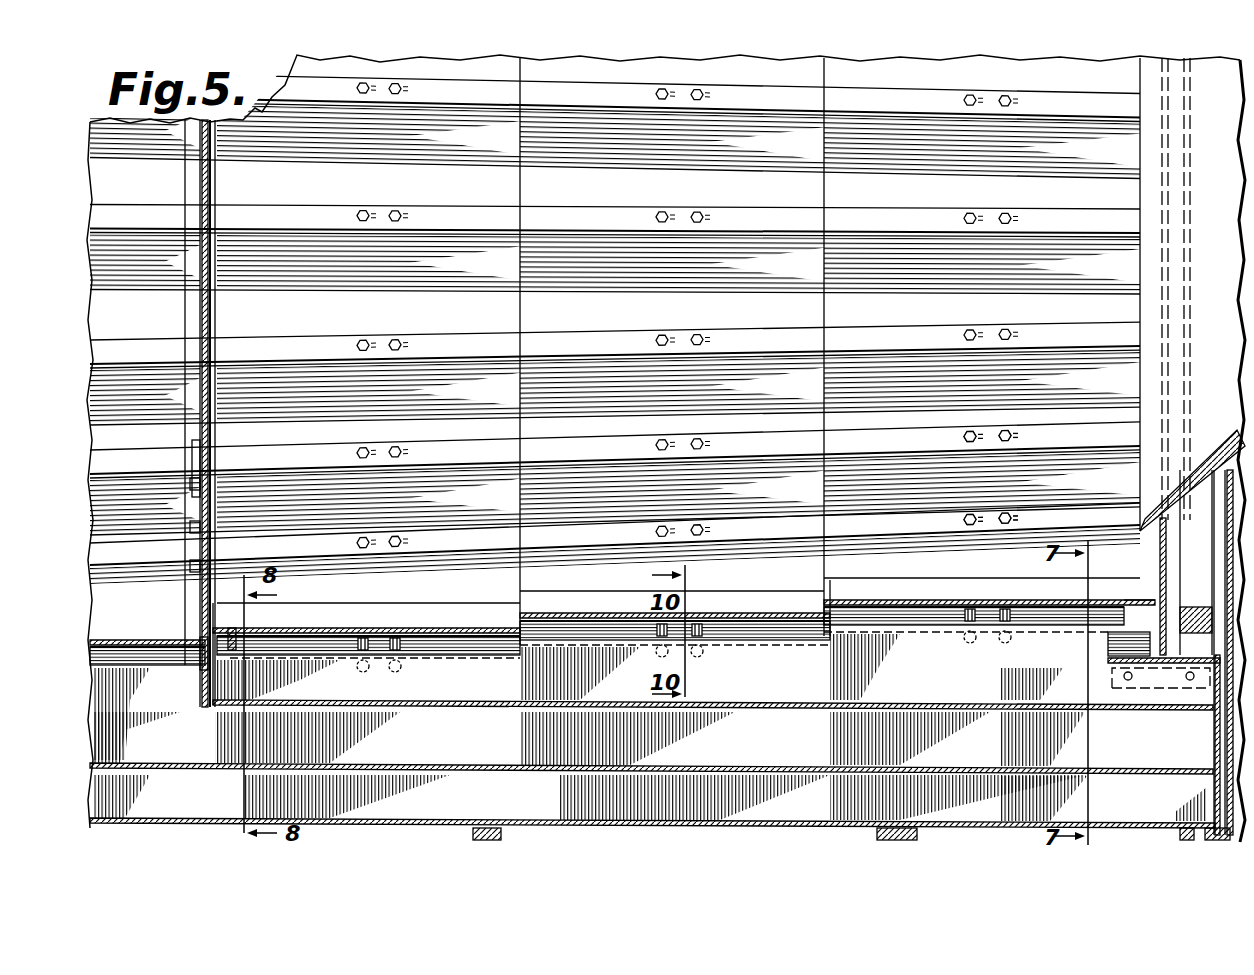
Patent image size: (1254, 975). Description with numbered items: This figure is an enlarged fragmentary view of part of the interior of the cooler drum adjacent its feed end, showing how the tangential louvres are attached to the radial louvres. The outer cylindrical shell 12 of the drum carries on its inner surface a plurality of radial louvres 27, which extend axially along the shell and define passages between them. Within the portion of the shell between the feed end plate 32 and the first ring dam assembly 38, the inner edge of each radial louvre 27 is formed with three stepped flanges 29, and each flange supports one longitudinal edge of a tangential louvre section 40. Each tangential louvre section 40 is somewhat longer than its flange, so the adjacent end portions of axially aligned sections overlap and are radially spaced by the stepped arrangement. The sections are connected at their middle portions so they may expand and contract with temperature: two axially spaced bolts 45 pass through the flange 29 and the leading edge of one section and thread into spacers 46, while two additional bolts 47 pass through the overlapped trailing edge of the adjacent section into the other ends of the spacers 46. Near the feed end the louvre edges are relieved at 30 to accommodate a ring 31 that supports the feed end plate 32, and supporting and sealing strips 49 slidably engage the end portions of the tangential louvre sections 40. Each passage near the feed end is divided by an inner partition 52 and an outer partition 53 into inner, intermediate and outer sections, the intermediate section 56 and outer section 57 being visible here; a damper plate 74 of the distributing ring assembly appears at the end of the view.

The outer cylindrical shell 12 is at (645, 819).
The radial louvres 27 is at (838, 691).
The stepped flanges 29 is at (488, 660).
The relieved portion 30 is at (1108, 645).
The ring 31 is at (1112, 673).
The feed end plate 32 is at (1158, 557).
The ring dam assemblies 38 is at (217, 513).
The tangential louvre section 40 is at (753, 396).
The bolts 45 is at (693, 657).
The spacers 46 is at (395, 638).
The bolts 47 is at (1008, 436).
The supporting and sealing strips 49 is at (196, 630).
The inner partition 52 is at (786, 709).
The outer partition 53 is at (740, 774).
The intermediate section 56 is at (900, 748).
The outer section 57 is at (902, 808).
The damper plates 74 is at (1228, 736).